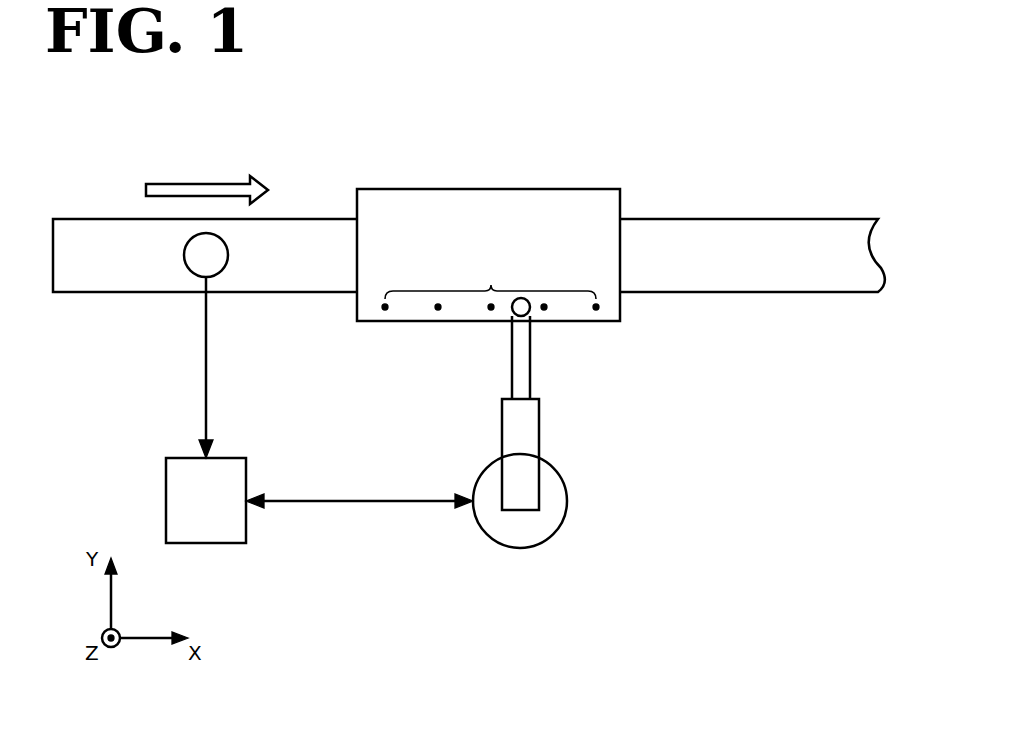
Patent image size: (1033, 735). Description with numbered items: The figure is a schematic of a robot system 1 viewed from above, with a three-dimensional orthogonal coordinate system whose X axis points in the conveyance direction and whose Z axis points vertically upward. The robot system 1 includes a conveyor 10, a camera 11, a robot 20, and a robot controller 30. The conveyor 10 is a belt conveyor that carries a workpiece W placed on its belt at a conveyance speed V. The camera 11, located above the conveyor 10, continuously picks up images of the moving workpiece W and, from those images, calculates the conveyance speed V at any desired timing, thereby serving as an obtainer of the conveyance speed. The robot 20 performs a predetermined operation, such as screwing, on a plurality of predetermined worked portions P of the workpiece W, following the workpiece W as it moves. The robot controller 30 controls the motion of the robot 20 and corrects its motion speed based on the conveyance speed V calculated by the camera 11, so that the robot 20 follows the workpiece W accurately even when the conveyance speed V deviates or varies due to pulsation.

The robot system 1 is at (450, 156).
The conveyor 10 is at (783, 219).
The camera 11 is at (228, 255).
The robot 20 is at (560, 470).
The robot controller 30 is at (246, 468).
The workpiece W is at (575, 189).
The worked portions P is at (490, 286).
The conveyance speed V is at (204, 183).